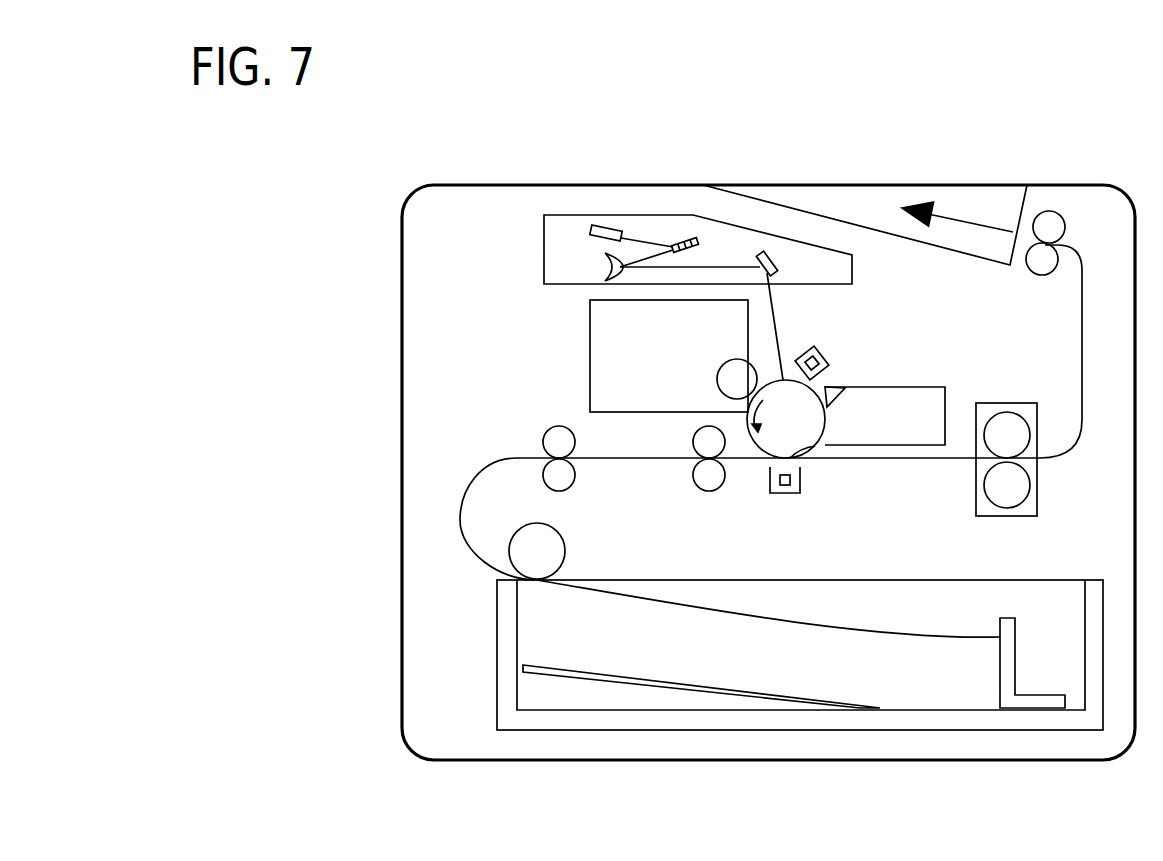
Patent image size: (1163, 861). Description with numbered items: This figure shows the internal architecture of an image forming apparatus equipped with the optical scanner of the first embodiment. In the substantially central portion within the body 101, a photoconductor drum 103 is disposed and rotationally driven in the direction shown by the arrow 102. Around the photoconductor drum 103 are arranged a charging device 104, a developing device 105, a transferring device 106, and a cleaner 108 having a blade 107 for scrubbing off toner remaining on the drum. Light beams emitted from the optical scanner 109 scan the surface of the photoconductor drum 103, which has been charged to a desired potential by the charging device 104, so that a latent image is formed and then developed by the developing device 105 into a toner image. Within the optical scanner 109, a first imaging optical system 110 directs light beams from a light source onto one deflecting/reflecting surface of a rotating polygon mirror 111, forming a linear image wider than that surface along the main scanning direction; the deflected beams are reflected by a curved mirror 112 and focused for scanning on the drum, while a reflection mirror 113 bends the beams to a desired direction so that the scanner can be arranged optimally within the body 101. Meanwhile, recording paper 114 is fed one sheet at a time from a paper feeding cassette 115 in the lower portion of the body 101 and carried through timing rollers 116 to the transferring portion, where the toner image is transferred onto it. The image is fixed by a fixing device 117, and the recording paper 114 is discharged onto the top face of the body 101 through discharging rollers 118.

The body 101 is at (768, 523).
The arrow 102 is at (775, 425).
The photoconductor drum 103 is at (817, 446).
The charging device 104 is at (823, 354).
The developing device 105 is at (588, 368).
The transferring device 106 is at (792, 493).
The blade 107 is at (840, 392).
The cleaner 108 is at (940, 387).
The optical scanner 109 is at (576, 214).
The first imaging optical system 110 is at (609, 228).
The rotating polygon mirror 111 is at (692, 240).
The curved mirror 112 is at (603, 267).
The reflection mirror 113 is at (766, 254).
The recording paper 114 is at (660, 603).
The paper feeding cassette 115 is at (548, 730).
The timing rollers 116 is at (709, 492).
The fixing device 117 is at (1037, 490).
The discharging rollers 118 is at (1060, 212).